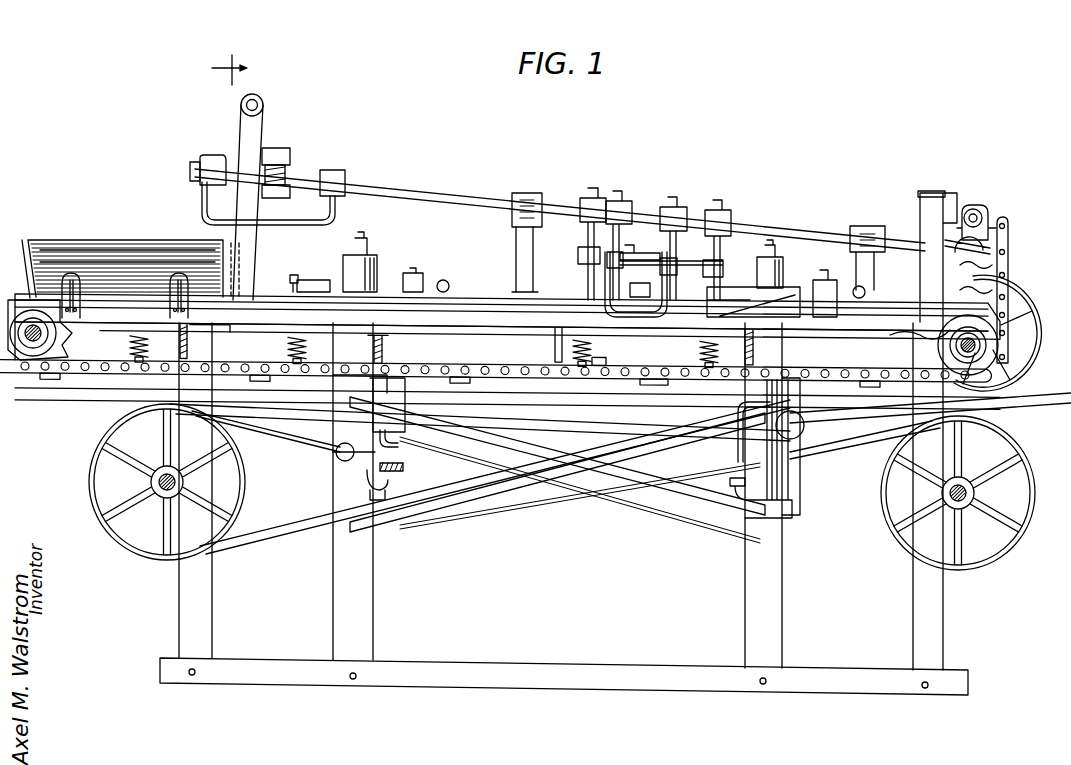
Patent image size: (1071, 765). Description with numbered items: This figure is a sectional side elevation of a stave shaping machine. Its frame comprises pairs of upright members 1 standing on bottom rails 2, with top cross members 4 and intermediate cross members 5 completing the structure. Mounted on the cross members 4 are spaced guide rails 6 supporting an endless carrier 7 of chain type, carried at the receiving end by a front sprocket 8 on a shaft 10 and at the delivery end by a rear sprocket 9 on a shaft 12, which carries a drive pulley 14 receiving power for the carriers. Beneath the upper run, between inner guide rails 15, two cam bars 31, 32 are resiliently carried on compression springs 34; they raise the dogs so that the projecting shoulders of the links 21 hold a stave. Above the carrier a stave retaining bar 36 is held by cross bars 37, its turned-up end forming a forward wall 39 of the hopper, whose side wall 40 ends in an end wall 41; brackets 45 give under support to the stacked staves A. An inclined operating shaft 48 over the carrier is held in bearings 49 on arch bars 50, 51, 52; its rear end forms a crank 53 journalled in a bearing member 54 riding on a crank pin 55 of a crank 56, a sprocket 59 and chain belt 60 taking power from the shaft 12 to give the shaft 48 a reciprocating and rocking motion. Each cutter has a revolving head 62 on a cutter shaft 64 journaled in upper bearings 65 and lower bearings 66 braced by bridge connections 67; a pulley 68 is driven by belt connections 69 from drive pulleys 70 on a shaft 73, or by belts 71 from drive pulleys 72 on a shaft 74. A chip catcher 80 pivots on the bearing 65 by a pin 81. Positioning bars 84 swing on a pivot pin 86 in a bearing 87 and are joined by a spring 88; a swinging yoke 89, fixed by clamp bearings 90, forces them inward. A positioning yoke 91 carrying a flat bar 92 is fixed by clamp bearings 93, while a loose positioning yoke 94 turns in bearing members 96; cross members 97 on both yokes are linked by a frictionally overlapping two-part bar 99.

The upright members 1 is at (200, 603).
The bottom rails 2 is at (550, 662).
The top cross members 4 is at (190, 343).
The intermediate cross members 5 is at (392, 470).
The guide rails 6 is at (750, 167).
The endless carriers 7 is at (90, 372).
The front sprockets 8 is at (20, 350).
The rear sprockets 9 is at (990, 372).
The shaft 10 is at (35, 340).
The shaft 12 is at (980, 355).
The drive pulley 14 is at (1035, 332).
The inner guide rails 15 is at (229, 60).
The links 21 is at (655, 381).
The cam bar 31 is at (258, 326).
The cam bar 32 is at (616, 353).
The compression springs 34 is at (306, 344).
The stave retaining bar 36 is at (462, 290).
The cross bars 37 is at (296, 275).
The forward wall 39 is at (228, 243).
The side wall 40 is at (82, 240).
The end wall 41 is at (22, 262).
The brackets 45 is at (70, 272).
The operating shaft 48 is at (425, 186).
The bearings 49 is at (276, 193).
The arch bar 50 is at (875, 270).
The arch bar 51 is at (536, 232).
The arch bar 52 is at (270, 240).
The crank 53 is at (932, 166).
The bearing member 54 is at (990, 215).
The crank pin 55 is at (976, 206).
The crank 56 is at (1005, 247).
The sprocket 59 is at (1012, 265).
The chain belts 60 is at (1010, 284).
The revolving head 62 is at (385, 290).
The cutter shaft 64 is at (333, 450).
The upper bearings 65 is at (338, 366).
The lower bearings 66 is at (335, 474).
The bridge connections 67 is at (400, 446).
The pulley 68 is at (335, 437).
The belt connections 69 is at (616, 482).
The drive pulleys 70 is at (880, 490).
The belts 71 is at (468, 482).
The drive pulleys 72 is at (243, 493).
The shaft 73 is at (970, 508).
The shaft 74 is at (163, 494).
The chip catcher 80 is at (312, 280).
The pin 81 is at (824, 270).
The positioning bars 84 is at (190, 171).
The pivot pin 86 is at (290, 150).
The bearing 87 is at (272, 148).
The spring 88 is at (262, 103).
The swinging yoke 89 is at (336, 214).
The clamp bearings 90 is at (210, 155).
The positioning yoke 91 is at (606, 280).
The flat bar 92 is at (648, 318).
The clamp bearings 93 is at (675, 202).
The positioning yoke 94 is at (582, 250).
The bearing members 96 is at (598, 193).
The cross members 97 is at (700, 266).
The two-part bar 99 is at (632, 250).
The staves A is at (112, 240).